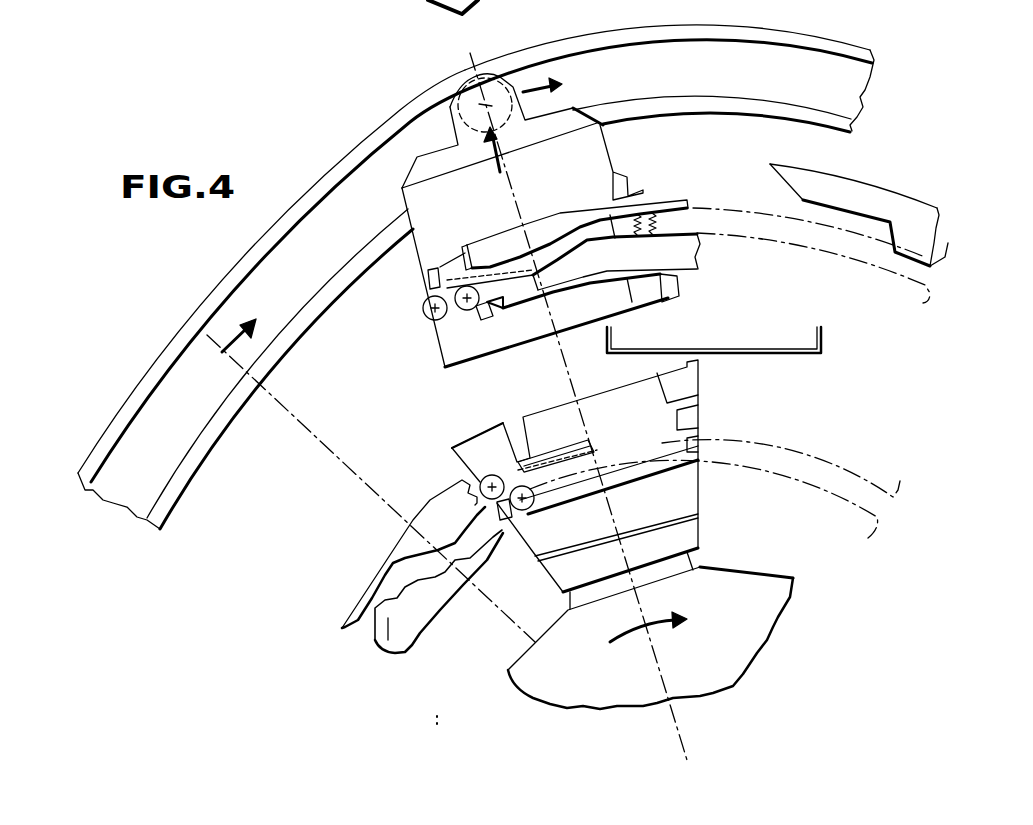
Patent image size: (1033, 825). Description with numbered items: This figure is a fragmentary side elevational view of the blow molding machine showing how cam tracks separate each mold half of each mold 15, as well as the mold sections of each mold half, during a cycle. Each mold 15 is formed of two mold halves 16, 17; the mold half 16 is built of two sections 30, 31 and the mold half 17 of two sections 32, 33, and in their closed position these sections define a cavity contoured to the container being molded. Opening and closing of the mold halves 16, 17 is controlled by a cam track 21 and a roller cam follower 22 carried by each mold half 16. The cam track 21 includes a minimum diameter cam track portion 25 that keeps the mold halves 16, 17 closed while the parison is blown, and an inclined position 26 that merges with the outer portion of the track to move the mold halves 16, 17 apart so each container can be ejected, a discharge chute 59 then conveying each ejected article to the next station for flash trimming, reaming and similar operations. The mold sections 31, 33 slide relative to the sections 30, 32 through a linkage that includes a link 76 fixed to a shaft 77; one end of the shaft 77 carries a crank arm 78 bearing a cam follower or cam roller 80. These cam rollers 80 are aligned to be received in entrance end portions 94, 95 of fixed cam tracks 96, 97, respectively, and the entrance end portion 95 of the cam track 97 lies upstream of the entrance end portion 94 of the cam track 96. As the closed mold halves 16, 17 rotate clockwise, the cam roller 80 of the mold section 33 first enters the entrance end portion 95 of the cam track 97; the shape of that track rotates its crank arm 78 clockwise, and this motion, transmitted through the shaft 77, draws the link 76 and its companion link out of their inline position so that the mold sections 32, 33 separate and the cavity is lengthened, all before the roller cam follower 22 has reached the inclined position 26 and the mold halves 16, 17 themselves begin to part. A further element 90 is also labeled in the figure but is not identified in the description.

The mold 15 is at (440, 385).
The mold half 16 is at (473, 345).
The mold half 17 is at (478, 447).
The cam track 21 is at (659, 64).
The roller cam follower 22 is at (505, 70).
The minimum diameter cam track portion 25 is at (770, 42).
The inclined cam track portion 26 is at (412, 128).
The mold section 30 is at (596, 296).
The mold section 31 is at (445, 326).
The mold section 32 is at (606, 410).
The mold section 33 is at (455, 445).
The discharge chute 59 is at (822, 333).
The link 76 is at (424, 16).
The shaft 77 is at (291, 6).
The crank arm 78 is at (430, 298).
The cam roller 80 is at (466, 316).
The member 90 is at (339, 11).
The entrance end portion 94 is at (466, 270).
The entrance end portion 95 is at (373, 603).
The fixed cam track 96 is at (683, 208).
The fixed cam track 97 is at (628, 464).